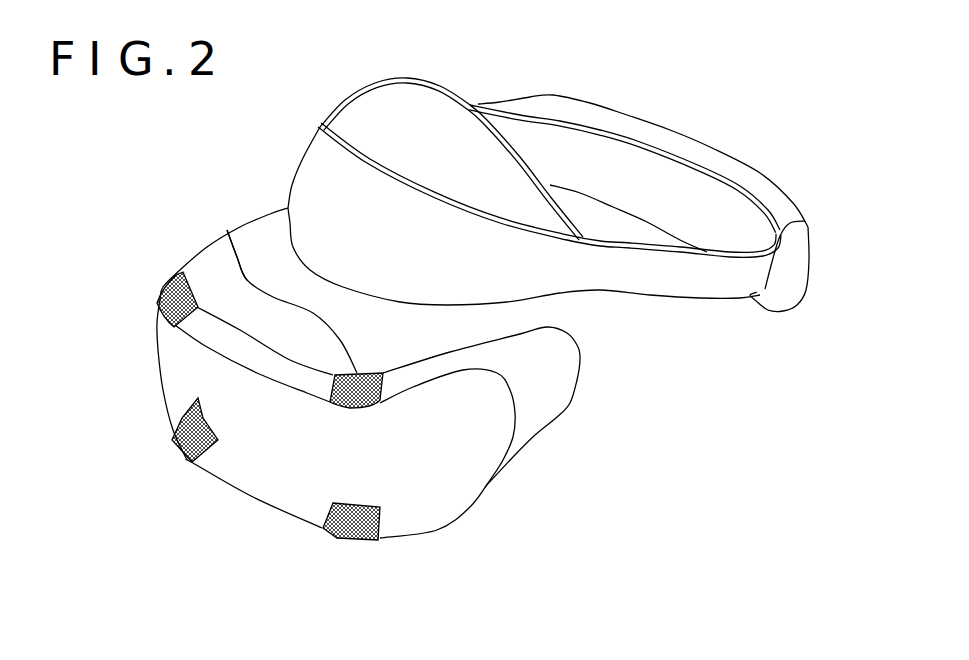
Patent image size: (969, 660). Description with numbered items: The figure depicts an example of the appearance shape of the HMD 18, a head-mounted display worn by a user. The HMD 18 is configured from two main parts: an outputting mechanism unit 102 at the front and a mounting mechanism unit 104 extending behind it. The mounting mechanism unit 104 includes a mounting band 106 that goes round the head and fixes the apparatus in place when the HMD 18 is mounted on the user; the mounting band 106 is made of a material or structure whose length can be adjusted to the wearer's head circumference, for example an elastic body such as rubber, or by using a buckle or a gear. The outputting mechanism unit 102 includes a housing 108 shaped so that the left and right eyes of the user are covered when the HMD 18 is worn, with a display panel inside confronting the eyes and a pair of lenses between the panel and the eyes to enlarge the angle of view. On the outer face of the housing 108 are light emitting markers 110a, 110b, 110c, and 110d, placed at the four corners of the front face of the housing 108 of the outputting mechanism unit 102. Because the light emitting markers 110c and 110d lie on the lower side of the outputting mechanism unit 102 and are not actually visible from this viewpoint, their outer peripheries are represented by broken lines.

The HMD 18 is at (724, 523).
The outputting mechanism unit 102 is at (150, 207).
The mounting mechanism unit 104 is at (817, 142).
The mounting band 106 is at (673, 294).
The housing 108 is at (463, 507).
The light emitting marker 110a is at (176, 276).
The light emitting marker 110b is at (230, 228).
The light emitting marker 110c is at (185, 458).
The light emitting marker 110d is at (341, 538).